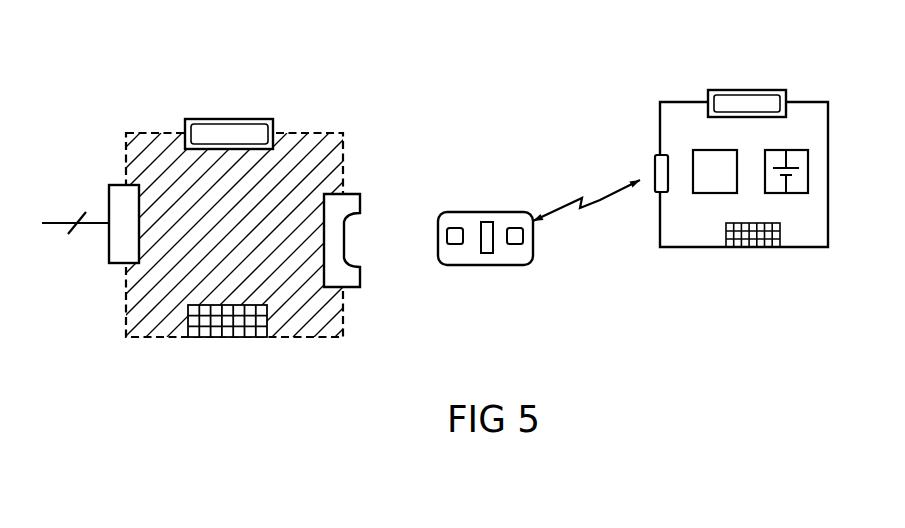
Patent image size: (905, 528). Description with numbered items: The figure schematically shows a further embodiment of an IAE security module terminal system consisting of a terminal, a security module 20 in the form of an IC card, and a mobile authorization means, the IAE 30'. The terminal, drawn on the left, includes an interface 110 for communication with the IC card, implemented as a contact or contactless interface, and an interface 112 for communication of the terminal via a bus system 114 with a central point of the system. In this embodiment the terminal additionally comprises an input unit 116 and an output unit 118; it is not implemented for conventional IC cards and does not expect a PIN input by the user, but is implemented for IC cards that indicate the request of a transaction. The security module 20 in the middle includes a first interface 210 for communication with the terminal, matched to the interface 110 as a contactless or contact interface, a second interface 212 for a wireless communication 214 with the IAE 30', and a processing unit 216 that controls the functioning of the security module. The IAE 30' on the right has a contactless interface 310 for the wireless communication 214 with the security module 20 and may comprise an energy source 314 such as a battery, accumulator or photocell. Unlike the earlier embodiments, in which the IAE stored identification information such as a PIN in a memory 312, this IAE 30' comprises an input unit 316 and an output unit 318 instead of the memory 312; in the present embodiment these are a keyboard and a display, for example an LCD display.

The security module 20 is at (480, 212).
The IAE 30' is at (744, 138).
The interface 110 is at (346, 194).
The interface 112 is at (109, 258).
The bus system 114 is at (98, 218).
The input unit 116 is at (252, 337).
The output unit 118 is at (302, 106).
The first interface 210 is at (458, 248).
The second interface 212 is at (508, 248).
The wireless communication 214 is at (598, 206).
The processing unit 216 is at (488, 256).
The contactless interface 310 is at (655, 160).
The memory 312 is at (715, 171).
The energy source 314 is at (800, 194).
The input unit 316 is at (737, 248).
The output unit 318 is at (752, 90).